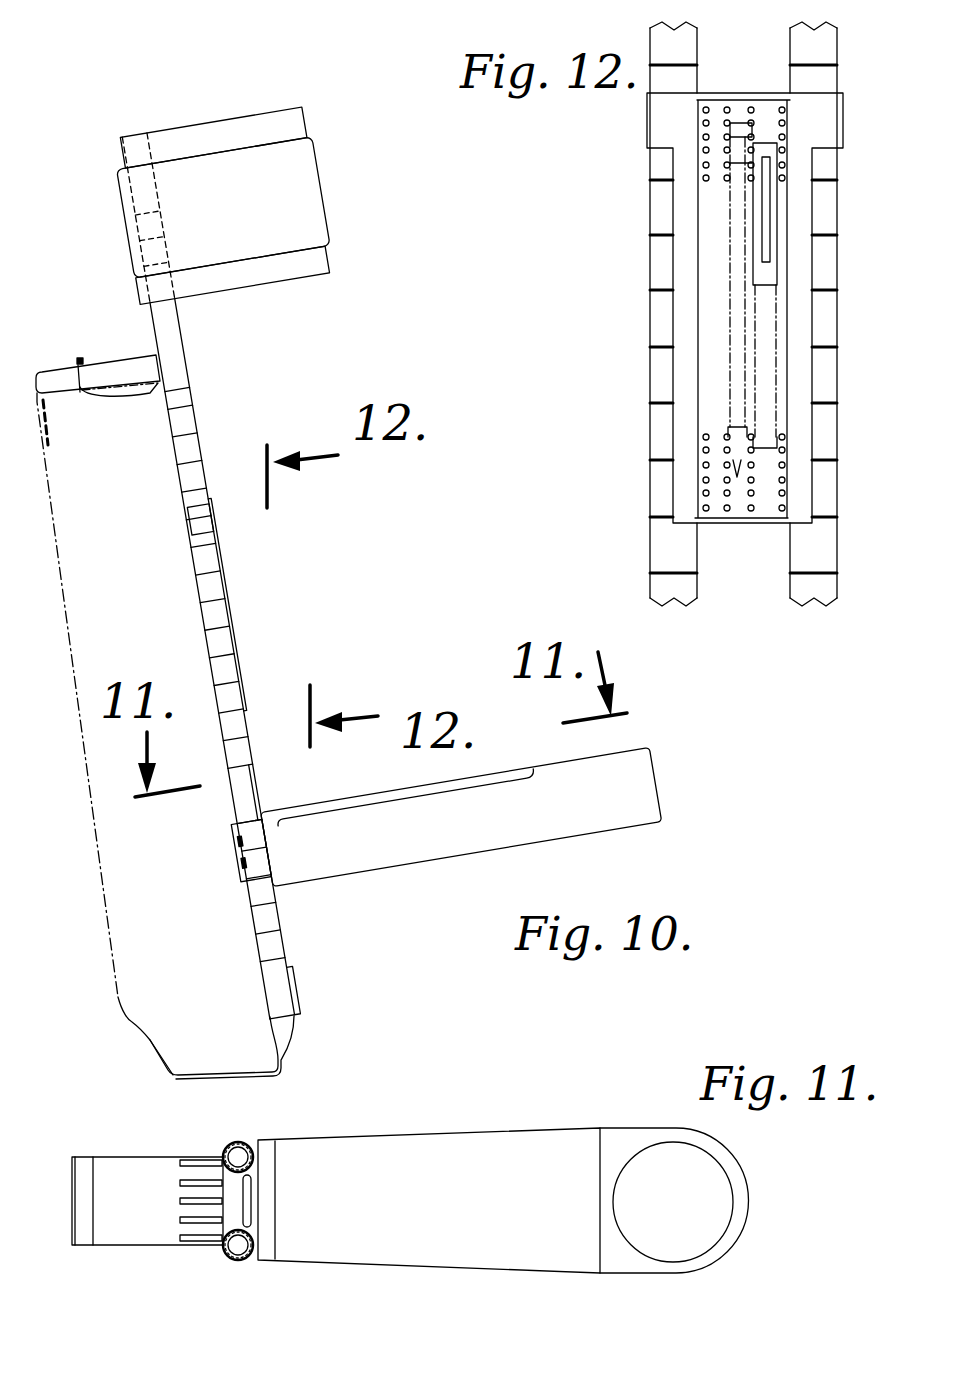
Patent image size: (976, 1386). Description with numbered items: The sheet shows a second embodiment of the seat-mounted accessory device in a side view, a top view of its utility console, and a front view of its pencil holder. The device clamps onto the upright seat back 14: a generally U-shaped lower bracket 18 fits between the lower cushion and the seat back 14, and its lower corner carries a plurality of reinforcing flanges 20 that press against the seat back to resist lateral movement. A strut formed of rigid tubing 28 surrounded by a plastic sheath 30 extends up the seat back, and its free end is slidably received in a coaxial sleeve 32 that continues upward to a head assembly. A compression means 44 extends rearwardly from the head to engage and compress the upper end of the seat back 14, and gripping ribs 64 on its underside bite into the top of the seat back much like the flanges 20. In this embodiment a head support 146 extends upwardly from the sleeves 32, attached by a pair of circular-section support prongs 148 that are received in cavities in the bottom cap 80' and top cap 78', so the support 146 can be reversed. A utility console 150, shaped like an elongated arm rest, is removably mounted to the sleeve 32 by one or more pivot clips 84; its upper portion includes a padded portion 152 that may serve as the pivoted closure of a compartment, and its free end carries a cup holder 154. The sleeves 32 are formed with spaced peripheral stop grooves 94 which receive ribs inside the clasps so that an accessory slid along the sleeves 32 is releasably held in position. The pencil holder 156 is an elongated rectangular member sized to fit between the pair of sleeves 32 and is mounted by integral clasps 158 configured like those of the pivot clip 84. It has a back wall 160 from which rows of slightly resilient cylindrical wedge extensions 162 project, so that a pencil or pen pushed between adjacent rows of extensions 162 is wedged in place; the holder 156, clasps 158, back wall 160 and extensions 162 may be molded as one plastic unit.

In FIG. 10, the seat back 14 is at (83, 730).
In FIG. 10, the lower bracket 18 is at (257, 1077).
In FIG. 11, the lower bracket 18 is at (130, 1155).
In FIG. 11, the reinforcing flanges 20 is at (183, 1218).
In FIG. 10, the rigid tubing 28 is at (253, 798).
In FIG. 10, the sheath 30 is at (279, 914).
In FIG. 11, the sheath 30 is at (238, 1262).
In FIG. 10, the sleeve 32 is at (199, 444).
In FIG. 12, the sleeve 32 is at (650, 560).
In FIG. 10, the compression means 44 is at (96, 366).
In FIG. 10, the gripping ribs 64 is at (95, 395).
In FIG. 10, the top cap 78' is at (222, 181).
In FIG. 10, the bottom cap 80' is at (263, 275).
In FIG. 10, the pivot clip 84 is at (238, 852).
In FIG. 11, the pivot clip 84 is at (237, 1143).
In FIG. 12, the stop grooves 94 is at (648, 575).
In FIG. 10, the head support 146 is at (307, 128).
In FIG. 10, the support prongs 148 is at (168, 258).
In FIG. 10, the utility console 150 is at (520, 850).
In FIG. 10, the padded portion 152 is at (492, 772).
In FIG. 11, the padded portion 152 is at (457, 1132).
In FIG. 11, the cup holder 154 is at (730, 1185).
In FIG. 10, the pencil holder 156 is at (222, 580).
In FIG. 12, the pencil holder 156 is at (723, 98).
In FIG. 12, the integral clasps 158 is at (843, 105).
In FIG. 12, the back wall 160 is at (690, 282).
In FIG. 12, the wedge extensions 162 is at (704, 436).